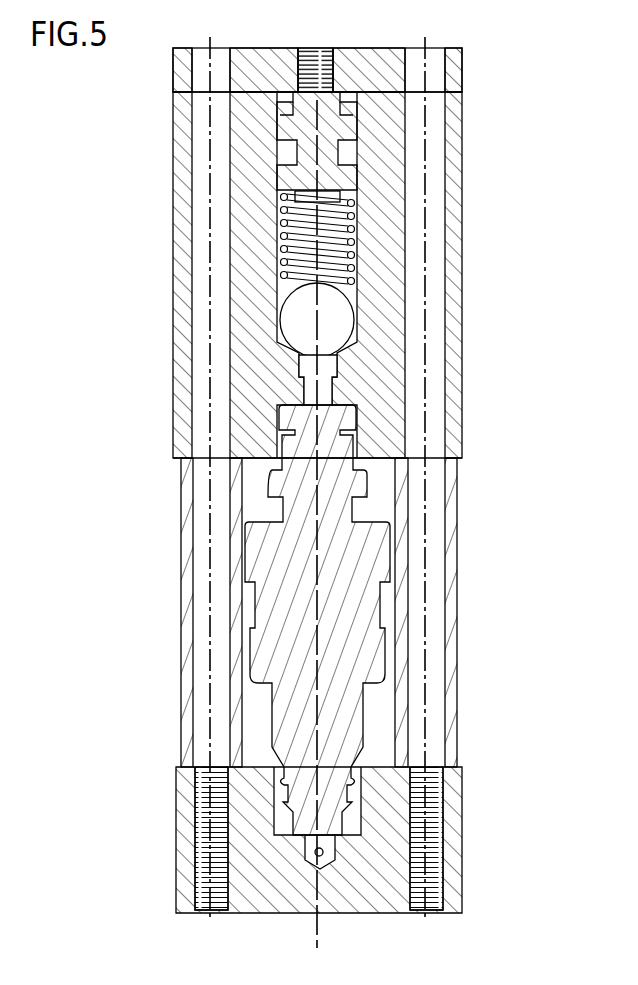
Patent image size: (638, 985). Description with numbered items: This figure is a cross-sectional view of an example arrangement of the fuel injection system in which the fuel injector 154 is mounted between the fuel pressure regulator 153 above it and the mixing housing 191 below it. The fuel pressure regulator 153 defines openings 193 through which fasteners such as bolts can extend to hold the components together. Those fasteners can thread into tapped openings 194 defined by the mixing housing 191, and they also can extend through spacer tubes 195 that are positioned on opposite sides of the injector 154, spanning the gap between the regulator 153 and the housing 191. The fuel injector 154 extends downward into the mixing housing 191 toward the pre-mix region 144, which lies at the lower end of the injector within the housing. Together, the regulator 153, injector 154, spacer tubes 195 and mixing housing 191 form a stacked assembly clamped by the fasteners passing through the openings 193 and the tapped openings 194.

The pre-mix region 144 is at (330, 850).
The fuel pressure regulator 153 is at (461, 242).
The fuel injector 154 is at (380, 605).
The mixing housing 191 is at (463, 840).
The openings 193 is at (192, 150).
The tapped openings 194 is at (200, 813).
The spacer tubes 195 is at (183, 527).